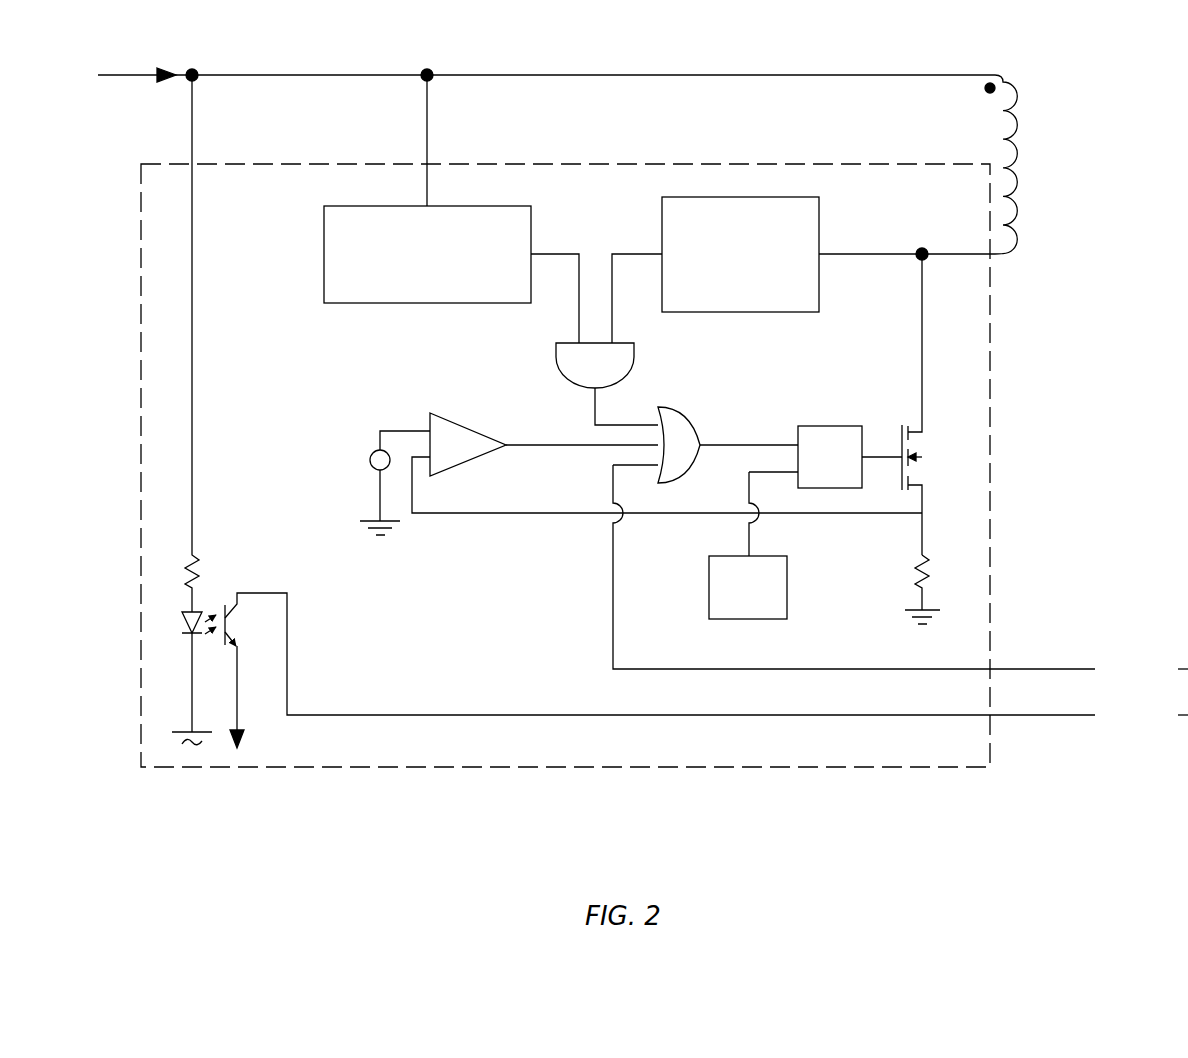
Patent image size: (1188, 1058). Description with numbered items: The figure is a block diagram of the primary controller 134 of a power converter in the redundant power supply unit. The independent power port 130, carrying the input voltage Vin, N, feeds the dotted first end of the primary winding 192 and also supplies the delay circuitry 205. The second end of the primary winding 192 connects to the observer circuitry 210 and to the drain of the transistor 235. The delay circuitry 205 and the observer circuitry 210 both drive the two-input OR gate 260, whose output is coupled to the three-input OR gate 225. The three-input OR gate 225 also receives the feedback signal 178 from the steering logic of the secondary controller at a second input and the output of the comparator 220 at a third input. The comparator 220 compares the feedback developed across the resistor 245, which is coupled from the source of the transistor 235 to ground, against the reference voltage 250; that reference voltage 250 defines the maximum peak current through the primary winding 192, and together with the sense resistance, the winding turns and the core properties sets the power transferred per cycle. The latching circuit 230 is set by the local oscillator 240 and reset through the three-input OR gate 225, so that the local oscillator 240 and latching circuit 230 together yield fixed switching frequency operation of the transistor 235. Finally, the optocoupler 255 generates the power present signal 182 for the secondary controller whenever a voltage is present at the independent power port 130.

The independent power port 130 is at (142, 63).
The primary winding 192 is at (994, 64).
The primary controller 134 is at (743, 163).
The delay circuitry 205 is at (408, 282).
The observer circuitry 210 is at (721, 296).
The 2-input OR gate 260 is at (632, 371).
The comparator 220 is at (459, 419).
The 3-input OR gate 225 is at (680, 408).
The latching circuit 230 is at (817, 426).
The transistor 235 is at (932, 447).
The resistor 245 is at (908, 572).
The reference voltage 250 is at (369, 457).
The optocoupler 255 is at (221, 594).
The local oscillator 240 is at (750, 619).
The feedback signal 178 is at (1143, 655).
The power present signal 182 is at (1143, 733).